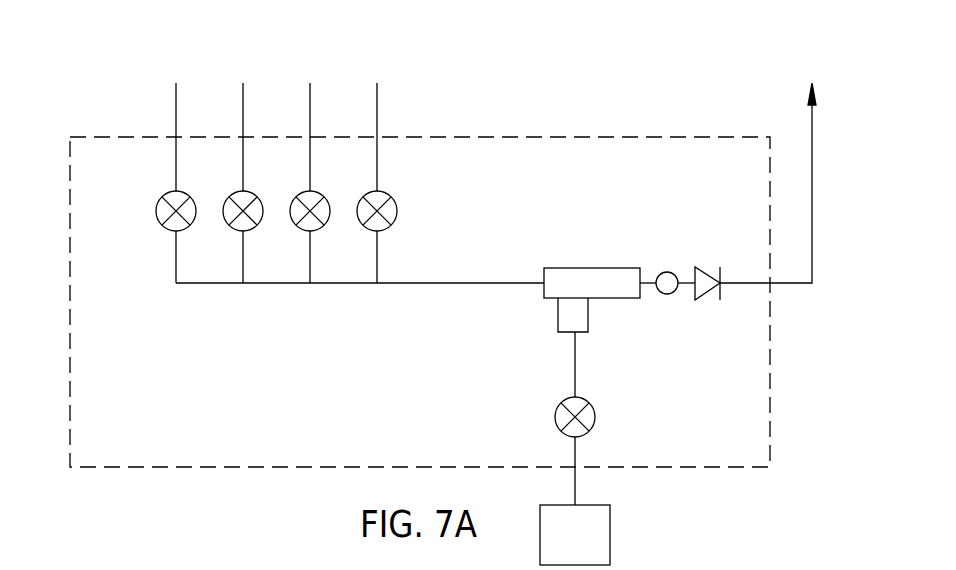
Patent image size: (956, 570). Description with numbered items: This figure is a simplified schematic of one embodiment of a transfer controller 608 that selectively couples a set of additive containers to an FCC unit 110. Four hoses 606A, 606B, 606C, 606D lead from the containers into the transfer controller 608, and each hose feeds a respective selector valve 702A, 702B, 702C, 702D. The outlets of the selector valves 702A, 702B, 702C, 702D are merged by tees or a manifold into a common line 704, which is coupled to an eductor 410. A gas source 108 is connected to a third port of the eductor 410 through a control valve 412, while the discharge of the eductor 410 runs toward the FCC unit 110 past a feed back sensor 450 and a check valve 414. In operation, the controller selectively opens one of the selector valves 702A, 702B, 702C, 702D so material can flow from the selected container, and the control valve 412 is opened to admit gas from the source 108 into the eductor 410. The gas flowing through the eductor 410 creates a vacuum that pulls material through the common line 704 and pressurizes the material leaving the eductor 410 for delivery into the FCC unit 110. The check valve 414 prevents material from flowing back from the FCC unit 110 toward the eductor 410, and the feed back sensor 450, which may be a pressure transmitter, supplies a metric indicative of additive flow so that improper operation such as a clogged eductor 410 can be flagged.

The hose 606A is at (176, 120).
The hose 606B is at (243, 119).
The hose 606C is at (310, 119).
The hose 606D is at (377, 119).
The selector valve 702A is at (156, 211).
The selector valve 702B is at (223, 211).
The selector valve 702C is at (290, 211).
The selector valve 702D is at (357, 211).
The transfer controller 608 is at (533, 136).
The common line 704 is at (412, 284).
The eductor 410 is at (590, 268).
The feed back sensor 450 is at (673, 272).
The check valve 414 is at (705, 267).
The FCC unit 110 is at (774, 146).
The control valve 412 is at (592, 405).
The gas source 108 is at (598, 543).